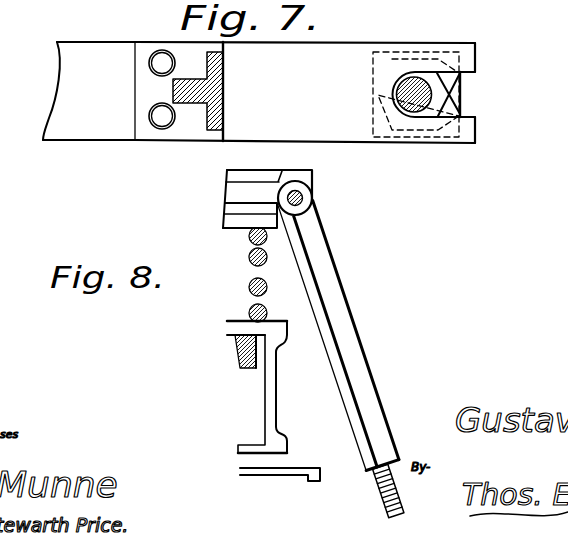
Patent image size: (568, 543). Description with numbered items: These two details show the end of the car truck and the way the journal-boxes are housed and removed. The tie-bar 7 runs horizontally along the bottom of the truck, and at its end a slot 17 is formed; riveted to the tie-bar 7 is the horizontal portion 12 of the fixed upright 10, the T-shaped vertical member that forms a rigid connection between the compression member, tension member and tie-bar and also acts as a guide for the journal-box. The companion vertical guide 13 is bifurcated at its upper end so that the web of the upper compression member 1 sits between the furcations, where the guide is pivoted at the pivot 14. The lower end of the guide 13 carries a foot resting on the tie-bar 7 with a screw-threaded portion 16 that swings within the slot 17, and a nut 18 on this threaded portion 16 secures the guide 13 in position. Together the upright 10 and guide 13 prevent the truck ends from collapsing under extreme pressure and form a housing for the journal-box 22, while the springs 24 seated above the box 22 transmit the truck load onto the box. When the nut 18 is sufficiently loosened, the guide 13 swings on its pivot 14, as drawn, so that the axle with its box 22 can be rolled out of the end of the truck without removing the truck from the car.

In FIG. 8, the upper compression member 1 is at (228, 191).
In FIG. 8, the tie-bar 7 is at (275, 473).
In FIG. 7, the upright 10 is at (227, 111).
In FIG. 7, the horizontal portion 12 is at (140, 97).
In FIG. 8, the vertical guide 13 is at (362, 344).
In FIG. 8, the pivot 14 is at (303, 200).
In FIG. 7, the screw-threaded portion 16 is at (432, 92).
In FIG. 8, the screw-threaded portion 16 is at (399, 504).
In FIG. 7, the slot 17 is at (472, 113).
In FIG. 7, the nut 18 is at (435, 83).
In FIG. 8, the journal-box 22 is at (276, 410).
In FIG. 8, the springs 24 is at (250, 286).